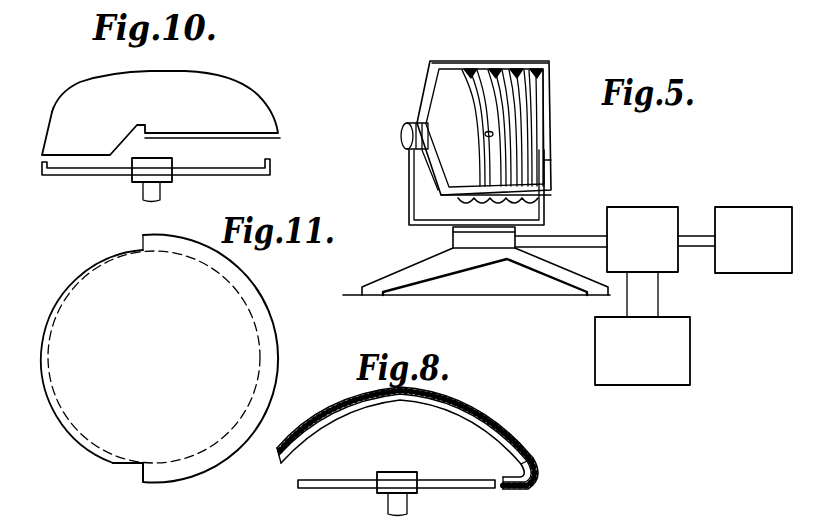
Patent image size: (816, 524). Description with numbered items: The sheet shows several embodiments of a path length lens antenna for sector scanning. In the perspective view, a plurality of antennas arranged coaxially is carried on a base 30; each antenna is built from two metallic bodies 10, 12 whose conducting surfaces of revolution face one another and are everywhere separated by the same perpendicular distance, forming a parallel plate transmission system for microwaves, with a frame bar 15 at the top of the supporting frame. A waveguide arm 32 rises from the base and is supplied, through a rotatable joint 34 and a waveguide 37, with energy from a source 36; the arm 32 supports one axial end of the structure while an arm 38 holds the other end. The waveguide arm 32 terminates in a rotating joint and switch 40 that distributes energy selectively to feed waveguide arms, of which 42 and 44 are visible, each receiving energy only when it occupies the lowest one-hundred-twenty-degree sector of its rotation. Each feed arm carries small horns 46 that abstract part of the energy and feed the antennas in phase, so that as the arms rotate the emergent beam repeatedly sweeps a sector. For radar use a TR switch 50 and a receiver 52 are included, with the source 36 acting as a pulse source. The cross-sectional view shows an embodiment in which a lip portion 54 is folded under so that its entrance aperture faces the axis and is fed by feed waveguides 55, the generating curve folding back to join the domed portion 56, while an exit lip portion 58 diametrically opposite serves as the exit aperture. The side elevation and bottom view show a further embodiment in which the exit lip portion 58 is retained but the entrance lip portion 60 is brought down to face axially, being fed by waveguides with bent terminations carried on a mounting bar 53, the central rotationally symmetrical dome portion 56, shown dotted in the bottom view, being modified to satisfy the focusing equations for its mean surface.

In FIG. 5, the metallic body 10 is at (477, 105).
In FIG. 5, the metallic body 12 is at (485, 134).
In FIG. 5, the frame cross bar 15 is at (452, 62).
In FIG. 5, the base 30 is at (412, 279).
In FIG. 5, the waveguide arm 32 is at (408, 222).
In FIG. 5, the rotatable joint 34 is at (485, 240).
In FIG. 5, the source 36 is at (776, 192).
In FIG. 5, the waveguide 37 is at (560, 250).
In FIG. 5, the arm 38 is at (548, 215).
In FIG. 10, the rotating joint and switch 40 is at (131, 184).
In FIG. 5, the rotating joint and switch 40 is at (401, 133).
In FIG. 8, the rotating joint and switch 40 is at (376, 492).
In FIG. 5, the feed waveguide arm 42 is at (428, 78).
In FIG. 5, the feed waveguide arm 44 is at (426, 175).
In FIG. 5, the horns 46 is at (526, 71).
In FIG. 5, the TR switch 50 is at (665, 196).
In FIG. 5, the receiver 52 is at (691, 344).
In FIG. 10, the mounting bar 53 is at (80, 182).
In FIG. 8, the mounting bar 53 is at (312, 481).
In FIG. 8, the entrance lip portion 54 is at (507, 491).
In FIG. 8, the feed waveguides 55 is at (542, 468).
In FIG. 10, the dome portion 56 is at (219, 74).
In FIG. 11, the dome portion 56 is at (180, 443).
In FIG. 8, the dome portion 56 is at (482, 410).
In FIG. 11, the exit lip portion 58 is at (271, 318).
In FIG. 8, the exit lip portion 58 is at (283, 443).
In FIG. 10, the entrance lip portion 60 is at (45, 136).
In FIG. 11, the entrance lip portion 60 is at (66, 428).